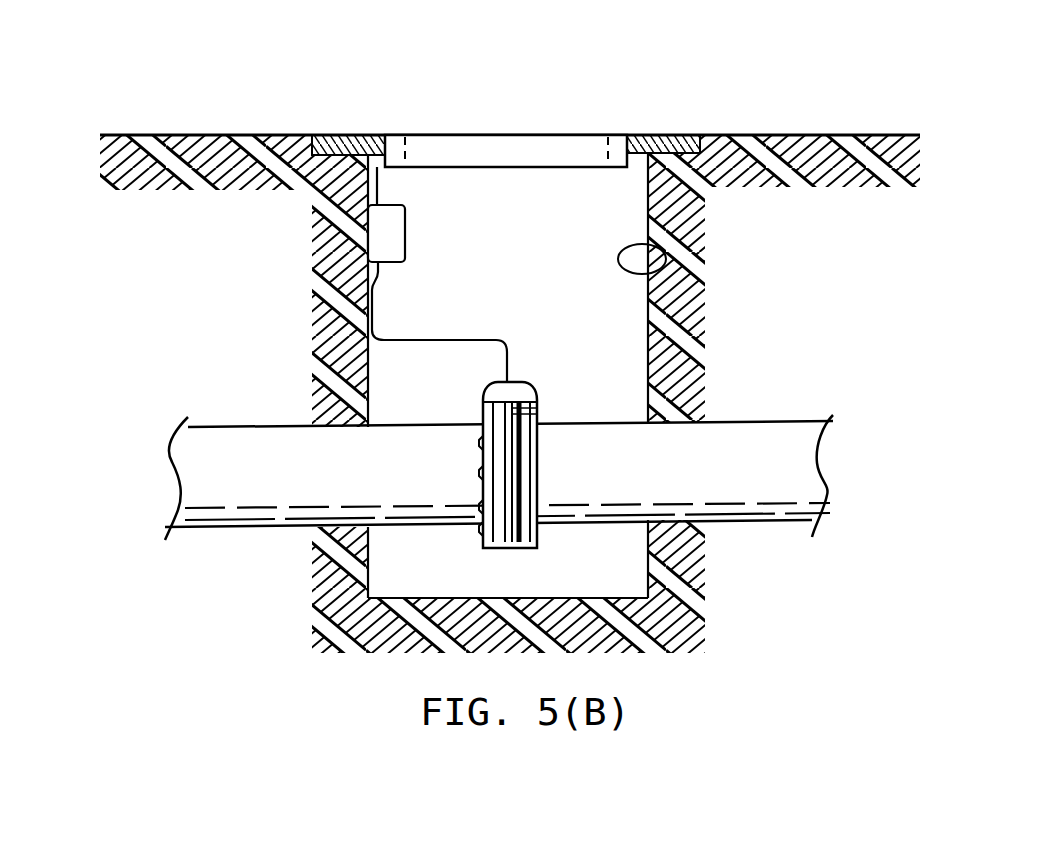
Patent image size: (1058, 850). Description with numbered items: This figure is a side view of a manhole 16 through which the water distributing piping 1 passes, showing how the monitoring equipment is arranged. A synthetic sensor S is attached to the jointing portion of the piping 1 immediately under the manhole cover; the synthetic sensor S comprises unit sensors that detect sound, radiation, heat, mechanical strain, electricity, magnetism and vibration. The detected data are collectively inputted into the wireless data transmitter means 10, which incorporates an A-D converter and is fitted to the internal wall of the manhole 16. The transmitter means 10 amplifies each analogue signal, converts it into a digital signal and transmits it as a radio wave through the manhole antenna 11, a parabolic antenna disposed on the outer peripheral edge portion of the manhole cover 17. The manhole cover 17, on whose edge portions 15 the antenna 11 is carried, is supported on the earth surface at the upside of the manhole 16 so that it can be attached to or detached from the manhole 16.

The water distributing piping 1 is at (220, 427).
The wireless data transmitter means 10 is at (398, 232).
The manhole antenna 11 is at (540, 83).
The mounting plate 15 is at (348, 138).
The manhole 16 is at (690, 268).
The manhole cover 17 is at (520, 132).
The synthetic sensor S is at (541, 446).